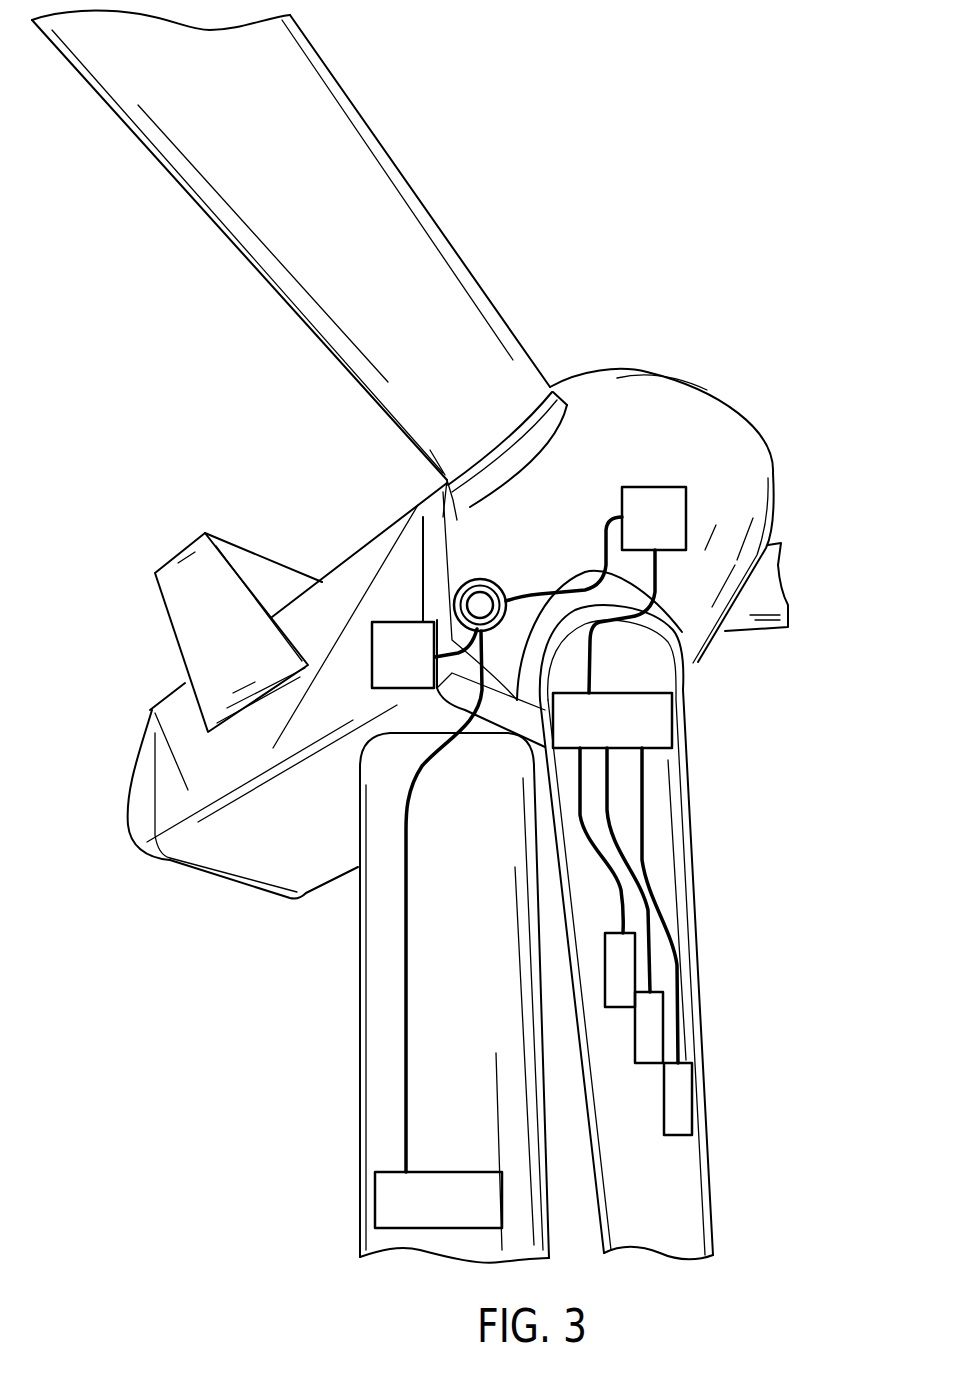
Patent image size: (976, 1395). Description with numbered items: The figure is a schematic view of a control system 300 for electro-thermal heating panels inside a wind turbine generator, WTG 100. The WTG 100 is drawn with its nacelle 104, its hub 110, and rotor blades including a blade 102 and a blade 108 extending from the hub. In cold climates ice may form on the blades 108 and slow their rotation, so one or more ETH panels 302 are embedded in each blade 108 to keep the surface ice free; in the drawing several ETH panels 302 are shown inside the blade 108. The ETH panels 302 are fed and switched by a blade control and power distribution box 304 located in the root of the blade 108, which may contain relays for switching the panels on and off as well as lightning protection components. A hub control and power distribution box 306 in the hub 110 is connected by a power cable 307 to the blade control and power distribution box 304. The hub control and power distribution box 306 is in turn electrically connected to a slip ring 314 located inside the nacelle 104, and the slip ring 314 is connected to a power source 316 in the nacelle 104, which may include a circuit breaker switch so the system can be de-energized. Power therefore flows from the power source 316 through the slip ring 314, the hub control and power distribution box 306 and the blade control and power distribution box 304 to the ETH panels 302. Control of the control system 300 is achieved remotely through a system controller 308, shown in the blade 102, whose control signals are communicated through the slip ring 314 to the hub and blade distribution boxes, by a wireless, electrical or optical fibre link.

The WTG 100 is at (282, 421).
The rotor blade 102 is at (373, 1062).
The nacelle 104 is at (213, 853).
The blade 108 is at (658, 818).
The hub 110 is at (740, 427).
The control system 300 is at (645, 375).
The ETH panels 302 is at (685, 1092).
The blade control and power distribution box 304 is at (652, 733).
The hub control and power distribution box 306 is at (663, 525).
The power cable 307 is at (593, 642).
The system controller 308 is at (422, 1208).
The slip ring 314 is at (480, 603).
The power source 316 is at (413, 640).